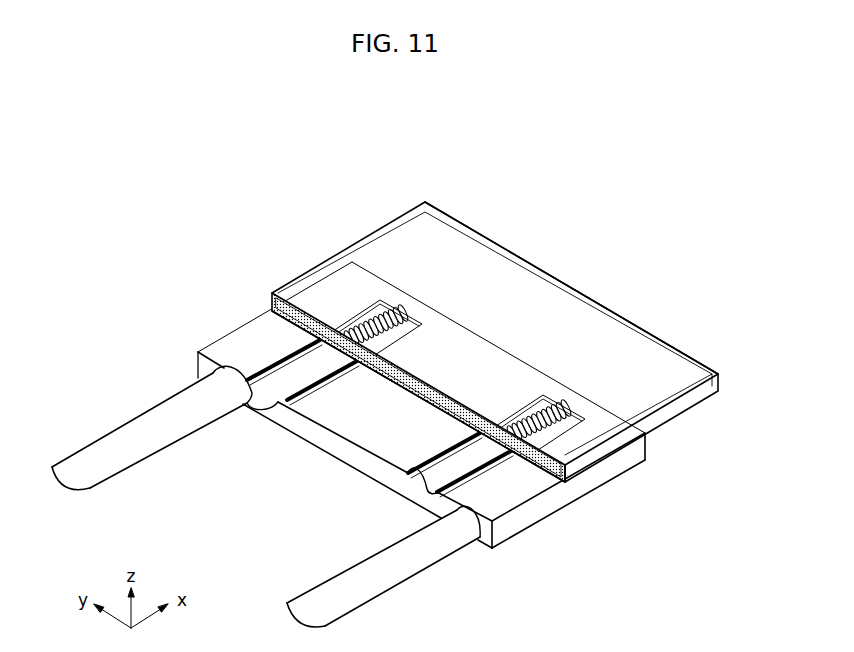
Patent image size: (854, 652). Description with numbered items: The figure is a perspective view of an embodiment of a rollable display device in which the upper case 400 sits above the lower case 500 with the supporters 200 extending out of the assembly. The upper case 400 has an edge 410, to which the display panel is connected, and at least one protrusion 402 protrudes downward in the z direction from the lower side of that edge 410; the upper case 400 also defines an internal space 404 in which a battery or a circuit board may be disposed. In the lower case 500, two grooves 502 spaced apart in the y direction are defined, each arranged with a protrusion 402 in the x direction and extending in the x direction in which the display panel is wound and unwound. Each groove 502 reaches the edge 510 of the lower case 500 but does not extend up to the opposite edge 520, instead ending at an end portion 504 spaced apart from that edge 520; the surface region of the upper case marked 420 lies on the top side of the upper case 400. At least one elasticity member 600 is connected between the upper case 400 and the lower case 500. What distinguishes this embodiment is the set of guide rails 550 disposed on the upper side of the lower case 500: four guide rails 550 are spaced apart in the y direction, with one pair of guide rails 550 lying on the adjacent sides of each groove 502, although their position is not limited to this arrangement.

The supporter 200 is at (115, 440).
The upper case 400 is at (560, 280).
The protrusion 402 is at (338, 364).
The internal space 404 is at (437, 406).
The edge 410 is at (412, 366).
The upper case 420 is at (630, 306).
The lower case 500 is at (325, 452).
The groove 502 is at (265, 410).
The end portion 504 is at (380, 302).
The edge 510 is at (282, 441).
The opposite edge 520 is at (612, 396).
The guide rail 550 is at (268, 366).
The elasticity member 600 is at (370, 334).